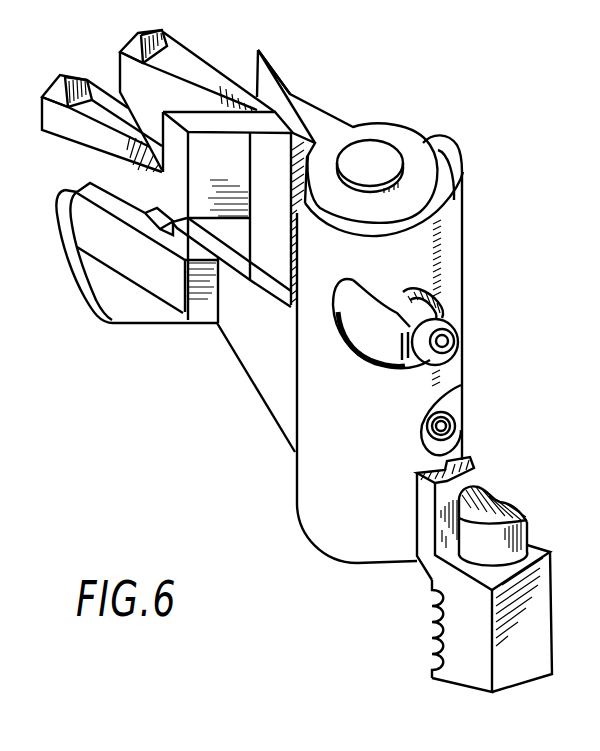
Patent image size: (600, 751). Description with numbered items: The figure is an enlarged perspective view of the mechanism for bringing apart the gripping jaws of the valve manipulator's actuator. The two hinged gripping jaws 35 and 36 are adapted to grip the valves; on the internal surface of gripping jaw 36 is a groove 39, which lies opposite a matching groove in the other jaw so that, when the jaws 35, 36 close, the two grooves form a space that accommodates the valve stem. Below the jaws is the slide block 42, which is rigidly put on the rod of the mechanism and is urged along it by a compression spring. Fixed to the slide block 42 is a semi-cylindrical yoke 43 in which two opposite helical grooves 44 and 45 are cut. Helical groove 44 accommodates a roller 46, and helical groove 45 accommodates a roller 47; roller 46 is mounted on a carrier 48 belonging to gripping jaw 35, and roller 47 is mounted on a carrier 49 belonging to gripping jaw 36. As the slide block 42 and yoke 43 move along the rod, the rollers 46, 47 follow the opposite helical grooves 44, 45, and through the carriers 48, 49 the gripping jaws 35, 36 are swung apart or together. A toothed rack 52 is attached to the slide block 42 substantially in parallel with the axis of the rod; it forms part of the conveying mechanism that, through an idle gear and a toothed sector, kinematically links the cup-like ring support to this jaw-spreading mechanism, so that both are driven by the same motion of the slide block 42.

The gripping jaw 35 is at (282, 83).
The gripping jaw 36 is at (282, 135).
The groove 39 is at (148, 232).
The slide block 42 is at (476, 468).
The semi-cylindrical yoke 43 is at (452, 229).
The helical groove 44 is at (450, 366).
The helical groove 45 is at (458, 398).
The roller 46 is at (443, 325).
The roller 47 is at (427, 425).
The carrier 48 is at (460, 340).
The carrier 49 is at (457, 433).
The toothed rack 52 is at (453, 625).